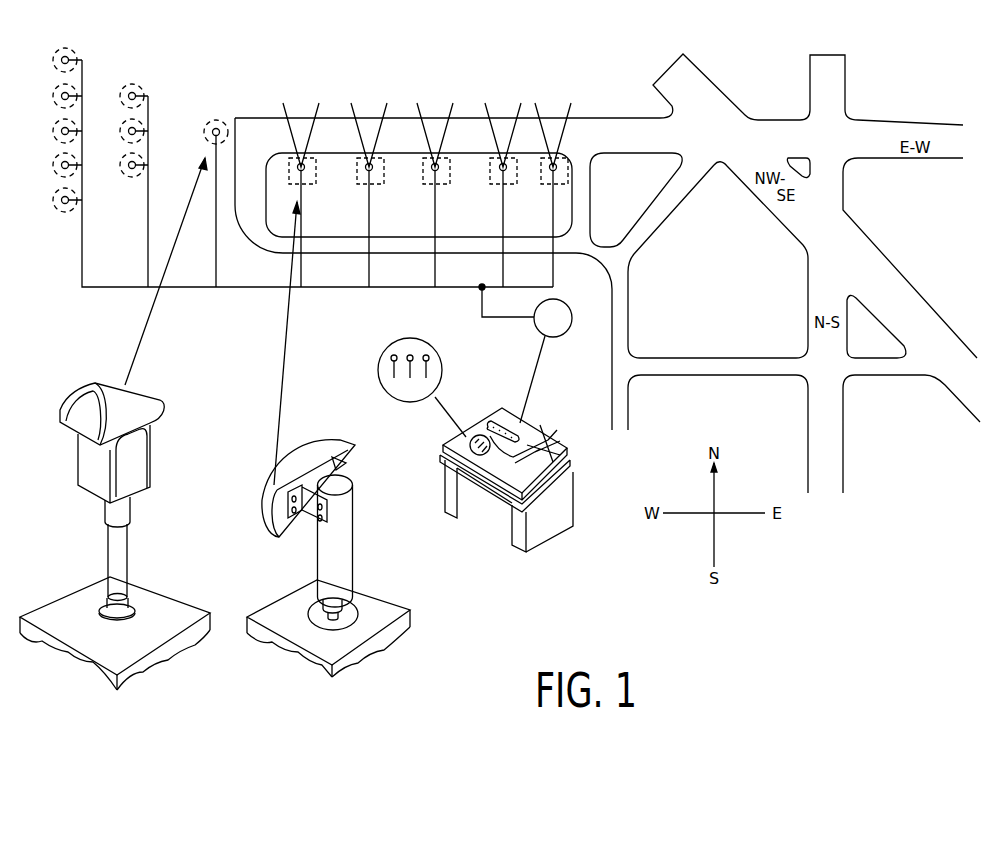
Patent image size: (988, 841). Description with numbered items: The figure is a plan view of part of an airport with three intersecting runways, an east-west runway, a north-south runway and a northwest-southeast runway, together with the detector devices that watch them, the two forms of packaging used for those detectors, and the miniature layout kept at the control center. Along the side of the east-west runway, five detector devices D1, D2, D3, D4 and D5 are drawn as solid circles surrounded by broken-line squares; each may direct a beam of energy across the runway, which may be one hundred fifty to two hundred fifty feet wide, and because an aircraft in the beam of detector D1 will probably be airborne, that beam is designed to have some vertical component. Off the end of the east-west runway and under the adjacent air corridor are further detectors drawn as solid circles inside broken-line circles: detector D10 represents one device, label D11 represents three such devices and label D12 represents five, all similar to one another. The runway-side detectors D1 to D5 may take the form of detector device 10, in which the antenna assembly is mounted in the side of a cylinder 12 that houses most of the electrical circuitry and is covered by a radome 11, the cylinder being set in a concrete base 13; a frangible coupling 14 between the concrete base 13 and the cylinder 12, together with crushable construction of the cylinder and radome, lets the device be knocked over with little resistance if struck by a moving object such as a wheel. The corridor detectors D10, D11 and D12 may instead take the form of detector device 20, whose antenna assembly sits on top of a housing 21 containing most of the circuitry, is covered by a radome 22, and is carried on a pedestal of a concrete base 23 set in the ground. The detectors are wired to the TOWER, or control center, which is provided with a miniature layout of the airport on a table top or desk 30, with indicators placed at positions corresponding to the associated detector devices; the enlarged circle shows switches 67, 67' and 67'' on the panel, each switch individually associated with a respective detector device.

The detector devices D12 is at (80, 50).
The detector devices D11 is at (146, 84).
The detector device D10 is at (217, 193).
The detector device D1 is at (290, 184).
The detector device D2 is at (358, 184).
The detector device D3 is at (421, 184).
The detector device D4 is at (487, 184).
The detector device D5 is at (542, 184).
The detector device 20 is at (112, 424).
The housing 21 is at (78, 474).
The radome 22 is at (58, 417).
The concrete base 23 is at (168, 592).
The detector device 10 is at (328, 439).
The radome 11 is at (264, 511).
The cylinder 12 is at (353, 560).
The concrete base 13 is at (410, 616).
The frangible coupling 14 is at (343, 608).
The switch 67 is at (414, 386).
The switch 67' is at (412, 350).
The switch 67'' is at (442, 356).
The table top or desk 30 is at (478, 406).
The tower TOWER is at (536, 330).